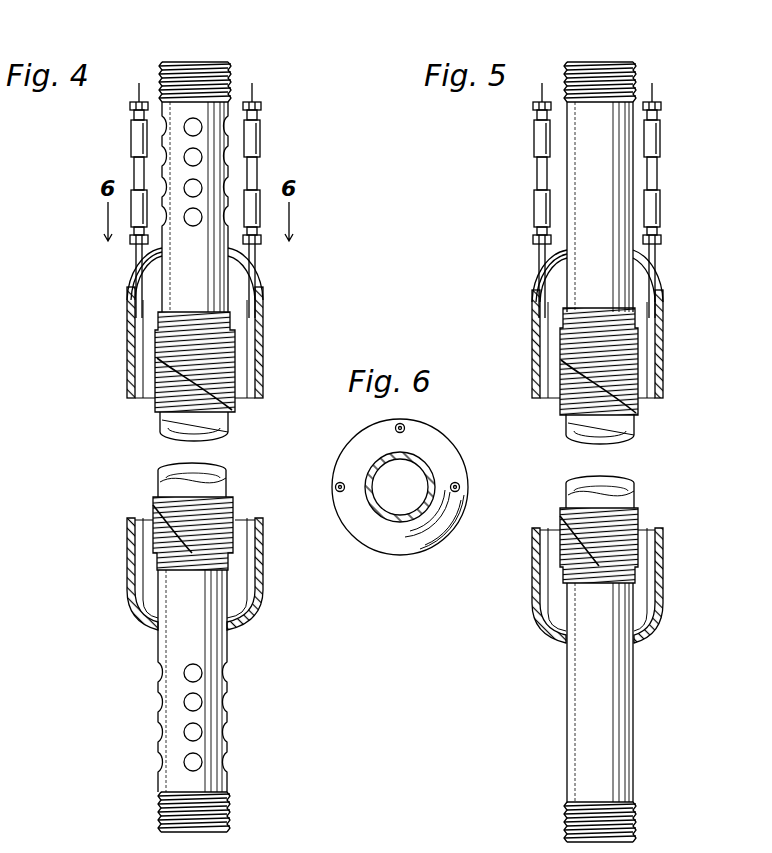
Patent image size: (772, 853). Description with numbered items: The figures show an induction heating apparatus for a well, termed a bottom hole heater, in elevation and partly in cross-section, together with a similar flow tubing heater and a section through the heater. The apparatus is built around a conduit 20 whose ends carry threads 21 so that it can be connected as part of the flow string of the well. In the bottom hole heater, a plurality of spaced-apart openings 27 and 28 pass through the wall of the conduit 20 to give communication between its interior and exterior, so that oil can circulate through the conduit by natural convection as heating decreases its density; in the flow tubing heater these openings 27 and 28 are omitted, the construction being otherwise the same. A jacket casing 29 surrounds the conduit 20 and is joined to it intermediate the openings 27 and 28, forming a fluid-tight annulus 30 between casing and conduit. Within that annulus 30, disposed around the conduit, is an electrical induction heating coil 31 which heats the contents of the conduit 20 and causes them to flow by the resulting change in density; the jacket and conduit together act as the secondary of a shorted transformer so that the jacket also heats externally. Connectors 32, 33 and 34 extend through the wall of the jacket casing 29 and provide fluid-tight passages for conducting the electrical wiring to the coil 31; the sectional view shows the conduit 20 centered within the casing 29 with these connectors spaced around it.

In FIG. 4, the conduit 20 is at (166, 294).
In FIG. 5, the conduit 20 is at (573, 664).
In FIG. 6, the conduit 20 is at (407, 494).
In FIG. 4, the threads 21 is at (228, 80).
In FIG. 5, the threads 21 is at (633, 74).
In FIG. 4, the openings 27 is at (192, 186).
In FIG. 4, the openings 28 is at (193, 731).
In FIG. 4, the jacket casing 29 is at (260, 372).
In FIG. 5, the jacket casing 29 is at (663, 585).
In FIG. 6, the jacket casing 29 is at (400, 487).
In FIG. 4, the annulus 30 is at (245, 340).
In FIG. 5, the annulus 30 is at (648, 568).
In FIG. 4, the electrical induction heating coil 31 is at (232, 404).
In FIG. 5, the electrical induction heating coil 31 is at (638, 404).
In FIG. 4, the connector 32 is at (252, 263).
In FIG. 5, the connector 32 is at (652, 262).
In FIG. 6, the connector 32 is at (460, 491).
In FIG. 4, the connector 33 is at (139, 268).
In FIG. 5, the connector 33 is at (542, 268).
In FIG. 6, the connector 33 is at (337, 489).
In FIG. 6, the connector 34 is at (404, 426).